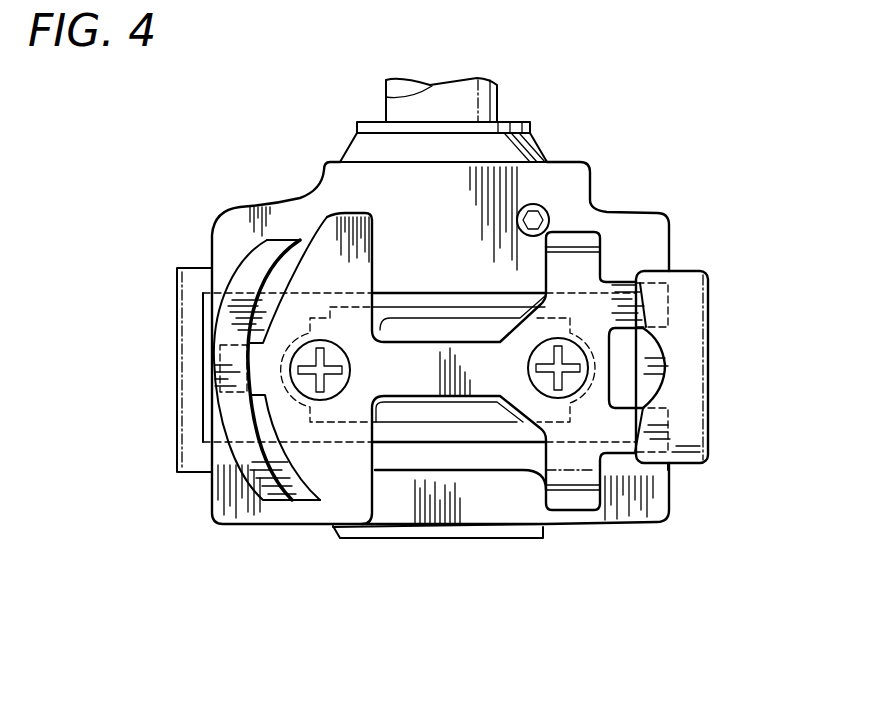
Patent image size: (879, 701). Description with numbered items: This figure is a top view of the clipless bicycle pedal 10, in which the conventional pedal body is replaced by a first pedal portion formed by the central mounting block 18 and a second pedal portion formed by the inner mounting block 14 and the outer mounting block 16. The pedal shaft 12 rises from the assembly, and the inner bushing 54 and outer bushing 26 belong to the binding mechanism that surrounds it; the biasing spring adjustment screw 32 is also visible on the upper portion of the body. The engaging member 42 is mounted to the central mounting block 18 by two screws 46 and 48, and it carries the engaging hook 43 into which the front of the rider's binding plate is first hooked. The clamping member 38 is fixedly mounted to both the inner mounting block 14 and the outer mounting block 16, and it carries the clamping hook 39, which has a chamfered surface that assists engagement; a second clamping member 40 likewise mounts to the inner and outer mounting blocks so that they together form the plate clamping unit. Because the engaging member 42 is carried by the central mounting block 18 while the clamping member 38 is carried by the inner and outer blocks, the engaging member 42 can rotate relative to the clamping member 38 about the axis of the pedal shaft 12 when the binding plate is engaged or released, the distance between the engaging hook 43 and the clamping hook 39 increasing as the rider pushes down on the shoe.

The clipless bicycle pedal 10 is at (693, 128).
The pedal shaft 12 is at (395, 97).
The inner mounting block 14 is at (352, 180).
The outer mounting block 16 is at (530, 508).
The central mounting block 18 is at (460, 407).
The outer bushing 26 is at (398, 540).
The biasing spring adjustment screw 32 is at (545, 208).
The first clamping member 38 is at (708, 292).
The clamping hook 39 is at (683, 440).
The second clamping member 40 is at (176, 288).
The first engaging member 42 is at (341, 477).
The engaging hook 43 is at (227, 376).
The screw 46 is at (300, 385).
The screw 48 is at (583, 358).
The inner bushing 54 is at (517, 122).